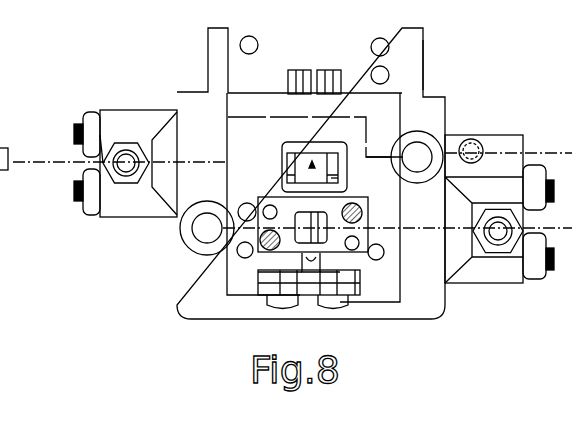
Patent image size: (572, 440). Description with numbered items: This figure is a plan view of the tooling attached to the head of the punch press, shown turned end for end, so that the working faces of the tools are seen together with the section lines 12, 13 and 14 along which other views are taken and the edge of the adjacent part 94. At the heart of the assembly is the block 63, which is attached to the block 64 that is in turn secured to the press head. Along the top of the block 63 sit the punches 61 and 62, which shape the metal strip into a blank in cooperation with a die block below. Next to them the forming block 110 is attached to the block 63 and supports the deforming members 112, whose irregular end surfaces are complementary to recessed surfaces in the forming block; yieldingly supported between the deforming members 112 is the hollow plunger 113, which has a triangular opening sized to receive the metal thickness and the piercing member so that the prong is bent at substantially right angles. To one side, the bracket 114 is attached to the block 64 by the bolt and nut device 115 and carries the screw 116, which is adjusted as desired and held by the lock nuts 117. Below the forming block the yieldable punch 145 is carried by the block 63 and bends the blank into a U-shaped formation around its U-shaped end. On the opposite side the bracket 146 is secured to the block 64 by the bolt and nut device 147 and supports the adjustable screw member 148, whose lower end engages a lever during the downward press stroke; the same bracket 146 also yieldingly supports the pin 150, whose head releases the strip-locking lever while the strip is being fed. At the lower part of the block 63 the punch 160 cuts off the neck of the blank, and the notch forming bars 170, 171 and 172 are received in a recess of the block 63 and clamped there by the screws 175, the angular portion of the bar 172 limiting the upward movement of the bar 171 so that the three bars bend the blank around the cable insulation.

The punch 160 is at (320, 258).
The block 63 is at (343, 28).
The block 64 is at (424, 65).
The punch 61 is at (306, 70).
The punch 62 is at (325, 70).
The forming block 110 is at (295, 143).
The deforming member 112 is at (292, 151).
The hollow plunger 113 is at (343, 170).
The yieldable punch 145 is at (296, 215).
The bracket 114 is at (121, 216).
The screw 116 is at (153, 138).
The lock nuts 117 is at (110, 146).
The bolt and nut device 115 is at (78, 134).
The bracket 146 is at (467, 284).
The pin 150 is at (469, 140).
The adjustable screw member 148 is at (474, 256).
The bolt and nut device 147 is at (527, 176).
The notch forming bar 172 is at (258, 272).
The screws 175 is at (340, 308).
The notch forming bar 171 is at (352, 289).
The notch forming bar 170 is at (345, 296).
The fluid line 94 is at (7, 142).
The section line 12- 12 is at (226, 232).
The section line 13- 13 is at (58, 165).
The section line 14- 14 is at (206, 118).